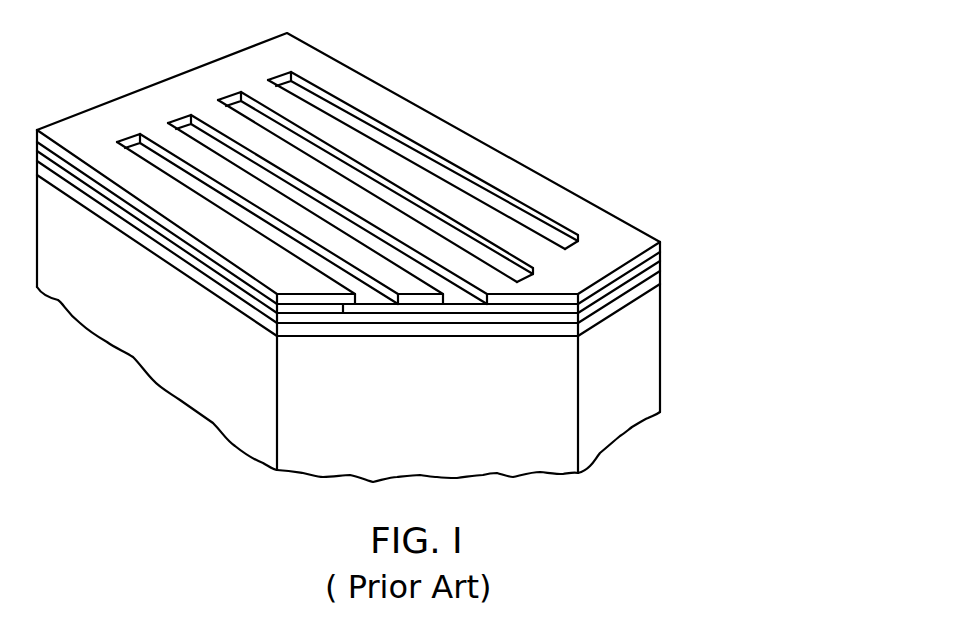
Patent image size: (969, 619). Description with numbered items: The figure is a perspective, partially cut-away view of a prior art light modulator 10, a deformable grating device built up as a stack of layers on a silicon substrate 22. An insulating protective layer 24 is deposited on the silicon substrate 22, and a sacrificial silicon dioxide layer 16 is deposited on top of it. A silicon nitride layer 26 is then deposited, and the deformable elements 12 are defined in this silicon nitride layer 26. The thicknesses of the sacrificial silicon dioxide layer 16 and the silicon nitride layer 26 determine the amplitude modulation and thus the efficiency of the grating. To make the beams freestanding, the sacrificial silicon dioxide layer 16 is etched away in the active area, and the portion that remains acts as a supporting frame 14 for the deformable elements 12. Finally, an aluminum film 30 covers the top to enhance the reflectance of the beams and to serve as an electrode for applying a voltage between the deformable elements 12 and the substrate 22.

The light modulator 10 is at (710, 345).
The deformable elements 12 is at (170, 142).
The supporting frame 14 is at (535, 180).
The sacrificial silicon dioxide layer 16 is at (662, 255).
The silicon substrate 22 is at (613, 422).
The insulating protective layer 24 is at (662, 272).
The silicon nitride layer 26 is at (662, 263).
The aluminum film 30 is at (622, 240).